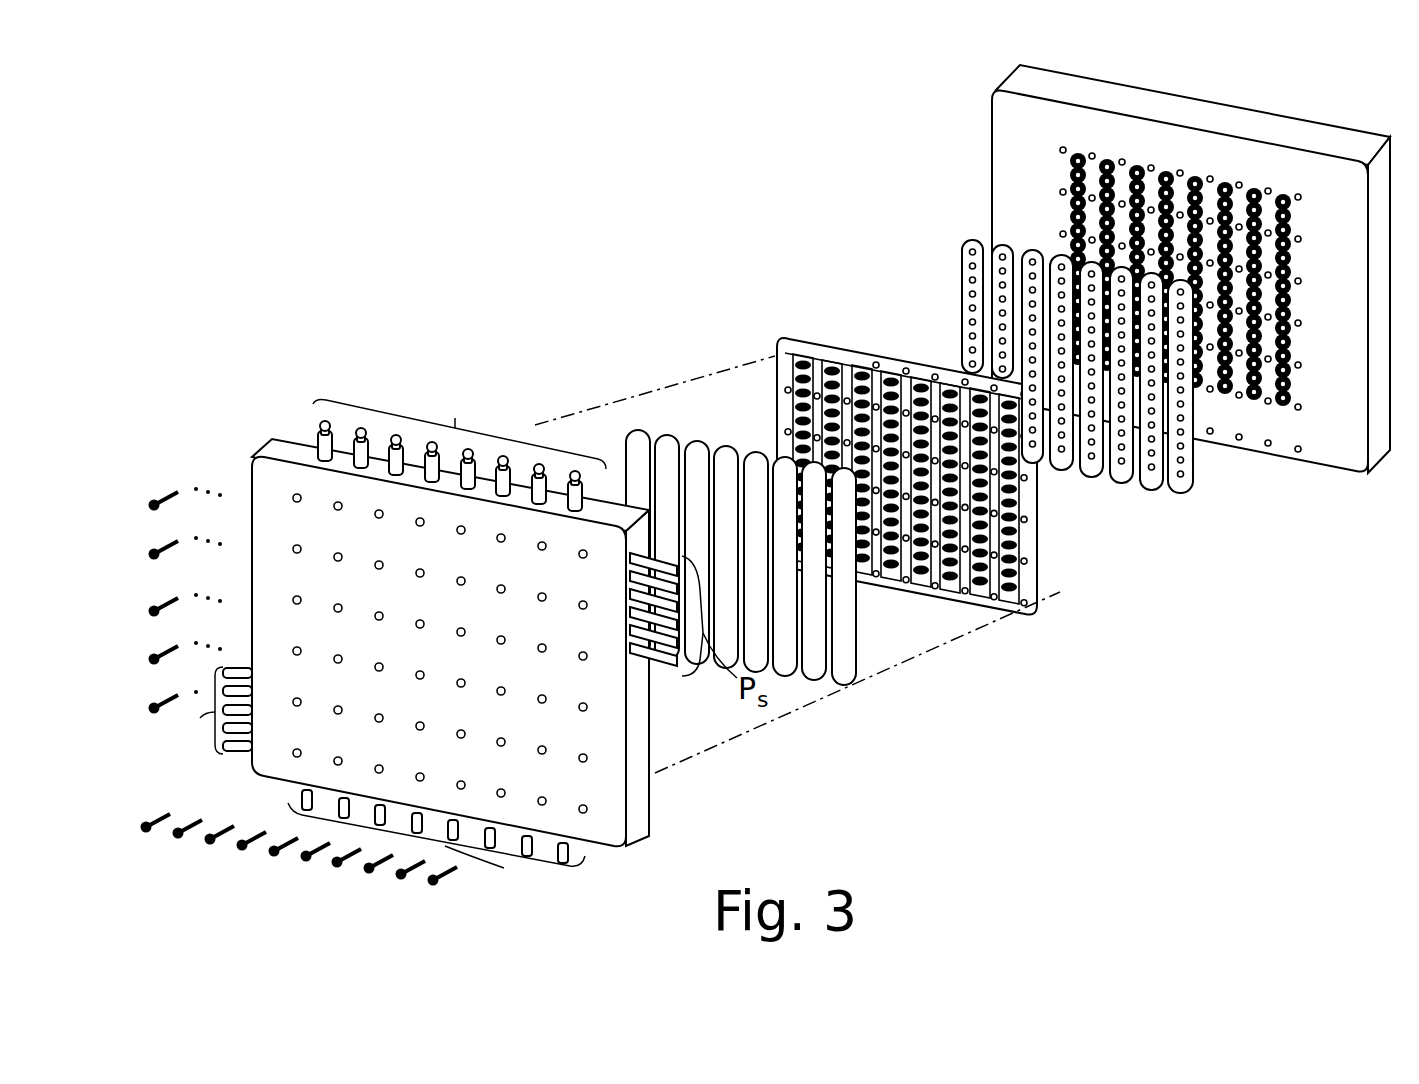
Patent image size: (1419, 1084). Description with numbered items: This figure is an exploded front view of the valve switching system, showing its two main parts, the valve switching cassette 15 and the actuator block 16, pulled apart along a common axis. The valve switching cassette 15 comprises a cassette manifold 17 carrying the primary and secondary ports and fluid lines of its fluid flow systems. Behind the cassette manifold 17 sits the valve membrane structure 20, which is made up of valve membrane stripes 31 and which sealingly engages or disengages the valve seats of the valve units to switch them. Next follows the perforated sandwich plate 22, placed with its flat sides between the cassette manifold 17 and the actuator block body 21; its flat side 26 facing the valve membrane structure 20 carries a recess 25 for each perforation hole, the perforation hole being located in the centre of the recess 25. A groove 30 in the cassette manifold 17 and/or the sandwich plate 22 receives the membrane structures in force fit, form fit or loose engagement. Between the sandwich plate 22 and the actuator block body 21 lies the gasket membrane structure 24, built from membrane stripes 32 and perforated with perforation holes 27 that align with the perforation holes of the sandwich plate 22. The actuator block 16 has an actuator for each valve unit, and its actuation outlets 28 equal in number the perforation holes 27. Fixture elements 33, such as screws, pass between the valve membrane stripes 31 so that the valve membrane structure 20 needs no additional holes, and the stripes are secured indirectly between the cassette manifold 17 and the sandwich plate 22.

The valve switching cassette 15 is at (930, 206).
The actuator block 16 is at (1359, 536).
The cassette manifold 17 is at (603, 828).
The valve membrane structure 20 is at (970, 727).
The actuator block body 21 is at (1327, 455).
The perforated sandwich plate 22 is at (817, 338).
The gasket membrane structure 24 is at (922, 146).
The recess 25 is at (888, 357).
The flat side 26 is at (778, 372).
The perforation holes 27 is at (1187, 483).
The actuation outlets 28 is at (1142, 165).
The groove 30 is at (1030, 625).
The valve membrane stripes 31 is at (823, 683).
The membrane stripes 32 is at (1002, 243).
The fixture elements 33 is at (284, 868).